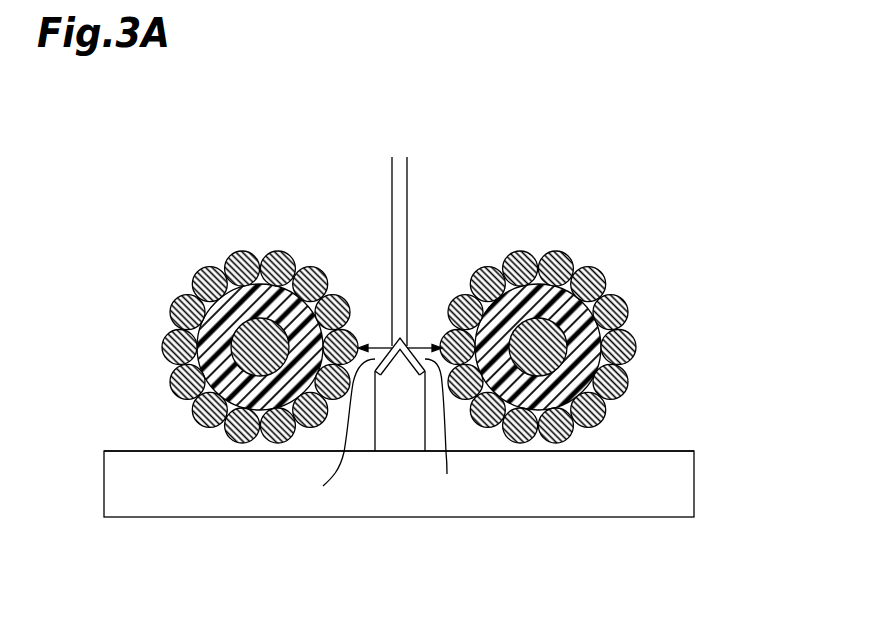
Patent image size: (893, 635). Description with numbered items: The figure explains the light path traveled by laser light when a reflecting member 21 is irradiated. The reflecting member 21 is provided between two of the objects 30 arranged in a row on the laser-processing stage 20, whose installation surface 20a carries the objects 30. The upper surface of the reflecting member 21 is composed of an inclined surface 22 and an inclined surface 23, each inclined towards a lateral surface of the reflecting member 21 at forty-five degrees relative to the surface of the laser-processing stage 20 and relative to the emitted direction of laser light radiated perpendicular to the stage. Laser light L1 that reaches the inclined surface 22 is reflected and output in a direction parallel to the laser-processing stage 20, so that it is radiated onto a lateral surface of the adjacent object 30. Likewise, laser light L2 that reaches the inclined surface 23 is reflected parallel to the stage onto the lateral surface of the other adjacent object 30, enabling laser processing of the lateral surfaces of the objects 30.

The object 30 is at (264, 227).
The laser-processing stage 20 is at (694, 486).
The installation surface 20a is at (653, 451).
The reflecting member 21 is at (363, 426).
The inclined surface 22 is at (331, 432).
The inclined surface 23 is at (443, 433).
The laser light L1 is at (392, 183).
The laser light L2 is at (407, 183).